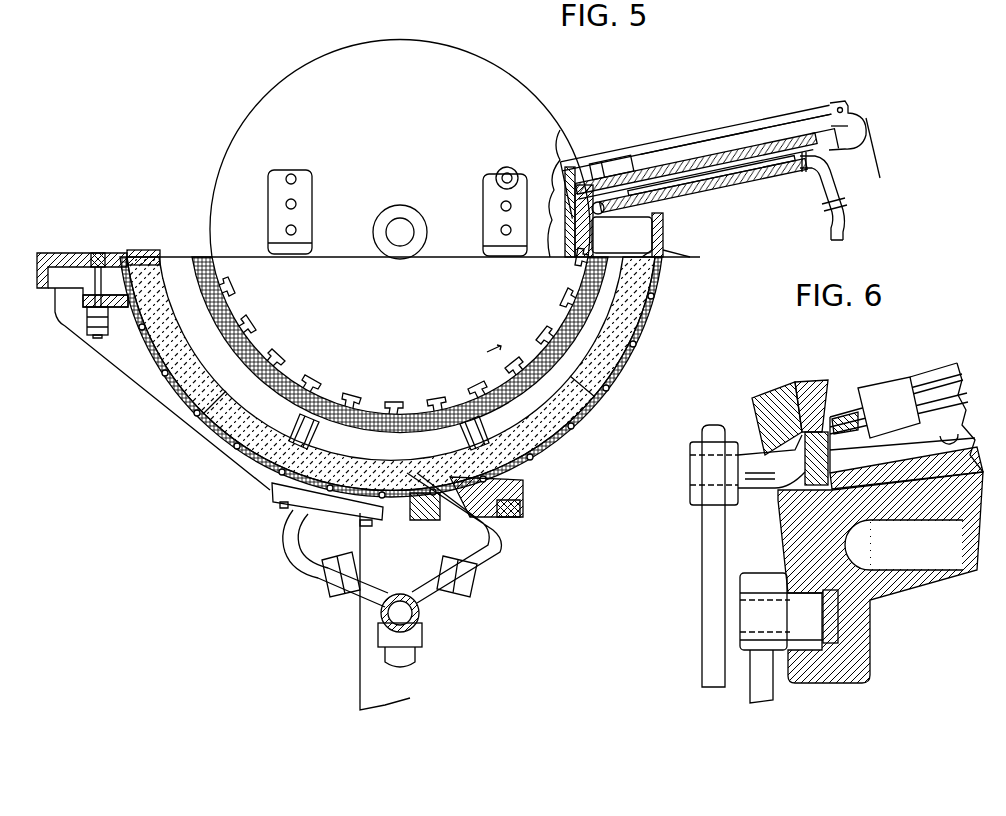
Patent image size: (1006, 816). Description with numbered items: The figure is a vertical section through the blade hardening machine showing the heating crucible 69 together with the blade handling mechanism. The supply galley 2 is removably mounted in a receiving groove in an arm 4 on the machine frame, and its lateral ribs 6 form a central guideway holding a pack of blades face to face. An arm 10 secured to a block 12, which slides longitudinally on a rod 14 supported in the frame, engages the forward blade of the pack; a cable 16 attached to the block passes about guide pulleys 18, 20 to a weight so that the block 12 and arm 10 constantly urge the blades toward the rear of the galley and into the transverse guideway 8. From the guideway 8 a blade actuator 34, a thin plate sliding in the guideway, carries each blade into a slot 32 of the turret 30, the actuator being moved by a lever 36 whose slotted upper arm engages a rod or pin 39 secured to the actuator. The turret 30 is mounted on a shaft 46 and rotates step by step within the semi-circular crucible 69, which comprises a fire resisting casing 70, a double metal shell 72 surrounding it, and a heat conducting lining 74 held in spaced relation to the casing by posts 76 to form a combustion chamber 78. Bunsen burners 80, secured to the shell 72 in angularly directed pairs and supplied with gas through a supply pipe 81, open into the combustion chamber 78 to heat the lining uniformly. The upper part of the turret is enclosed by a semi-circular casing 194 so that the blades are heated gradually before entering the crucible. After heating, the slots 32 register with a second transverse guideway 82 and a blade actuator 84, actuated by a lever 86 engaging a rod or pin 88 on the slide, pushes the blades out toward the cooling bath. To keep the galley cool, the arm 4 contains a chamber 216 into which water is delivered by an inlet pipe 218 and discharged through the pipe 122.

In FIG. 5, the semi-circular casing 194 is at (428, 56).
In FIG. 5, the shaft 46 is at (401, 226).
In FIG. 5, the combustion chamber 78 is at (188, 250).
In FIG. 5, the guide pulley 18 is at (514, 170).
In FIG. 5, the transverse guideway 8 is at (550, 193).
In FIG. 5, the transverse guideway 82 is at (592, 235).
In FIG. 5, the inlet pipe 218 is at (664, 222).
In FIG. 5, the cable 16 is at (692, 117).
In FIG. 5, the block 12 is at (689, 131).
In FIG. 6, the block 12 is at (943, 363).
In FIG. 5, the rod 14 is at (687, 133).
In FIG. 6, the rod 14 is at (843, 417).
In FIG. 5, the arm 10 is at (606, 144).
In FIG. 6, the arm 10 is at (883, 440).
In FIG. 5, the arm 4 is at (707, 205).
In FIG. 6, the arm 4 is at (914, 576).
In FIG. 5, the supply galley 2 is at (658, 154).
In FIG. 6, the supply galley 2 is at (900, 500).
In FIG. 5, the lateral ribs 6 is at (735, 131).
In FIG. 5, the chamber 216 is at (717, 201).
In FIG. 6, the chamber 216 is at (964, 590).
In FIG. 5, the guide pulley 20 is at (866, 116).
In FIG. 5, the pipe 122 is at (830, 220).
In FIG. 5, the blade receiving slots 32 is at (570, 302).
In FIG. 5, the crucible 69 is at (387, 310).
In FIG. 5, the turret 30 is at (248, 356).
In FIG. 5, the casing 70 is at (632, 336).
In FIG. 5, the double metal shell 72 is at (626, 362).
In FIG. 5, the lining 74 is at (618, 385).
In FIG. 5, the posts 76 is at (312, 440).
In FIG. 5, the Bunsen burners 80 is at (288, 524).
In FIG. 5, the supply pipe 81 is at (418, 656).
In FIG. 6, the lever 36 is at (702, 542).
In FIG. 6, the rod or pin 39 is at (748, 445).
In FIG. 6, the blade actuator 34 is at (770, 508).
In FIG. 6, the rod or pin 88 is at (792, 572).
In FIG. 6, the blade actuator 84 is at (840, 630).
In FIG. 6, the lever 86 is at (772, 695).